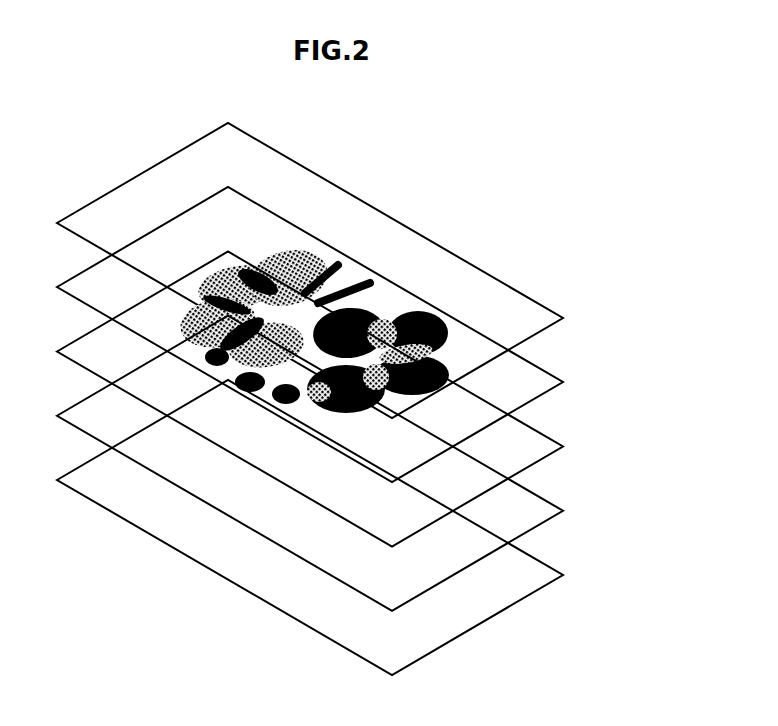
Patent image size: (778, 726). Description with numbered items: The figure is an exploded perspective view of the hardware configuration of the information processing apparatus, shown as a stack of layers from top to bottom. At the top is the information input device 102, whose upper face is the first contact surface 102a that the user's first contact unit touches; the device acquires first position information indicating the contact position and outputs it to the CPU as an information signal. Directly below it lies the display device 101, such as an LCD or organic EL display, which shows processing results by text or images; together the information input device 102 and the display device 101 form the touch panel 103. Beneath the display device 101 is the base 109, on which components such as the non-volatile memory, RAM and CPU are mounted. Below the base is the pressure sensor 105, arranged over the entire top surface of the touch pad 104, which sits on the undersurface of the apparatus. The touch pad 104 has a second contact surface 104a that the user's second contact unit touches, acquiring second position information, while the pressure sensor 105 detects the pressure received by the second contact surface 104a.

The first contact surface 102a is at (368, 226).
The information input device 102 is at (382, 270).
The display device 101 is at (630, 265).
The touch panel 103 is at (382, 302).
The base 109 is at (533, 438).
The pressure sensor 105 is at (533, 503).
The touch pad 104 is at (339, 529).
The second contact surface 104a is at (192, 525).